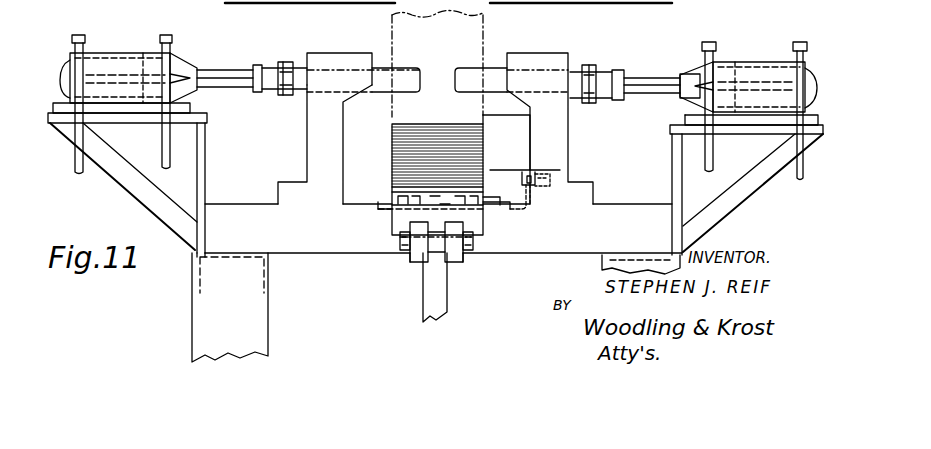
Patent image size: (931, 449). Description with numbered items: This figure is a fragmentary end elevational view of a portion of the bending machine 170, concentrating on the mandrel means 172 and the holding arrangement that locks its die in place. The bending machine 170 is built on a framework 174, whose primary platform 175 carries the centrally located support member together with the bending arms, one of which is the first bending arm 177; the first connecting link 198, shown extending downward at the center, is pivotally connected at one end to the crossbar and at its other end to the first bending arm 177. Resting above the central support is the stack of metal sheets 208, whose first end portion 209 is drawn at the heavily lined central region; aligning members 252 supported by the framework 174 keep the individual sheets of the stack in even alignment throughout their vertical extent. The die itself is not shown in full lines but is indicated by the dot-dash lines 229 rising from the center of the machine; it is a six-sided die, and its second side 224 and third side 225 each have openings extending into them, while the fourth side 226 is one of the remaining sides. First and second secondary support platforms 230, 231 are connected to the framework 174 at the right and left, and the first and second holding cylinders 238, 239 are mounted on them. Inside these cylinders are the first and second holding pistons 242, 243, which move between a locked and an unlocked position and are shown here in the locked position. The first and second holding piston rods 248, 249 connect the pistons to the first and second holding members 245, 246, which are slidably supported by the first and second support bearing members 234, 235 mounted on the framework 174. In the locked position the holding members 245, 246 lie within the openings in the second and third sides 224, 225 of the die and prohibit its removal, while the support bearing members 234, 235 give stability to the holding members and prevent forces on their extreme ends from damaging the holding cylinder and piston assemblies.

The bending machine 170 is at (351, 312).
The mandrel means 172 is at (268, 156).
The framework 174 is at (204, 309).
The primary platform 175 is at (395, 209).
The first bending arm 177 is at (398, 228).
The first connecting link 198 is at (440, 297).
The stack of metal sheets 208 is at (395, 163).
The first end portion of the stack of metal sheets 209 is at (395, 148).
The second side of the die 224 is at (486, 100).
The third side of the die 225 is at (395, 108).
The fourth side of the die 226 is at (486, 133).
The dot-dash lines indicating the die 229 is at (488, 27).
The first secondary support platform 230 is at (760, 134).
The second secondary support platform 231 is at (158, 126).
The first support bearing member 234 is at (580, 101).
The second support bearing member 235 is at (307, 113).
The first holding cylinder 238 is at (790, 57).
The second holding cylinder 239 is at (132, 51).
The first holding piston 242 is at (738, 75).
The second holding piston 243 is at (152, 52).
The first holding member 245 is at (492, 64).
The second holding member 246 is at (378, 58).
The first holding piston rod 248 is at (653, 80).
The second holding piston rod 249 is at (228, 70).
The aligning members 252 is at (487, 157).